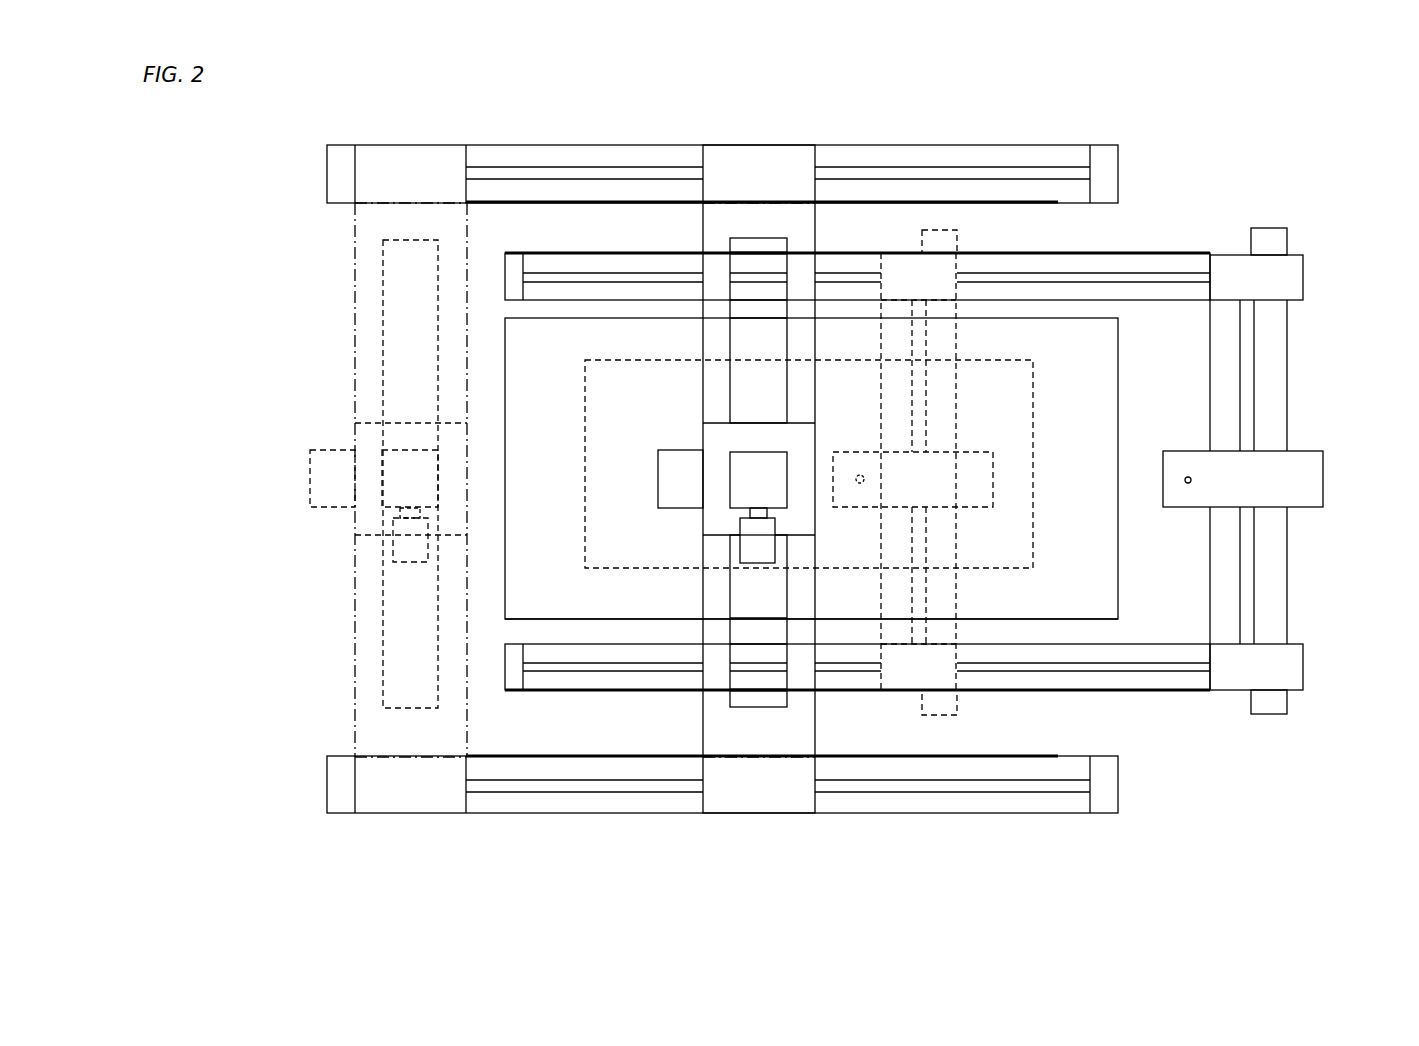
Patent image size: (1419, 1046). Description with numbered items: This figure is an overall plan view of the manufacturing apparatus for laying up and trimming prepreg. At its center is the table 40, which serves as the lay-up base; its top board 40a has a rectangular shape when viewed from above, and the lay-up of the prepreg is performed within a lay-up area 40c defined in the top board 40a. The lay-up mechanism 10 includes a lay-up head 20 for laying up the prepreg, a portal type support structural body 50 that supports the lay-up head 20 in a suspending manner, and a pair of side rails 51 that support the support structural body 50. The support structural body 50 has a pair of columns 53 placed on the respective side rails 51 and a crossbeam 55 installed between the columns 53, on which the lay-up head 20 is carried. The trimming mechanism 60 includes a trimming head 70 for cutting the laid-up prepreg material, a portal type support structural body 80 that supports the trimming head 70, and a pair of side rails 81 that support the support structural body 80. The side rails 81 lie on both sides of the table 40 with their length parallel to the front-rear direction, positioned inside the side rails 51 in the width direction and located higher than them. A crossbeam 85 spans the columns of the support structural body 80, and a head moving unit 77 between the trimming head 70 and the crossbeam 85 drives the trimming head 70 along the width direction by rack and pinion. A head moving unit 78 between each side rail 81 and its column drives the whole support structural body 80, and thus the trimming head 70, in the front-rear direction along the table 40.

The lay-up mechanism 10 is at (327, 661).
The lay-up head 20 is at (347, 524).
The table 40 is at (847, 473).
The top board 40a is at (1085, 572).
The lay-up area 40c is at (1005, 392).
The support structural body 50 is at (722, 483).
The side rail 51 is at (627, 150).
The column 53 is at (753, 160).
The crossbeam 55 is at (807, 236).
The trimming mechanism 60 is at (1113, 475).
The trimming head 70 is at (1172, 510).
The head moving unit 77 is at (1325, 450).
The head moving unit 78 is at (1272, 228).
The support structural body 80 is at (1254, 475).
The side rail 81 is at (1085, 262).
The crossbeam 85 is at (1268, 580).